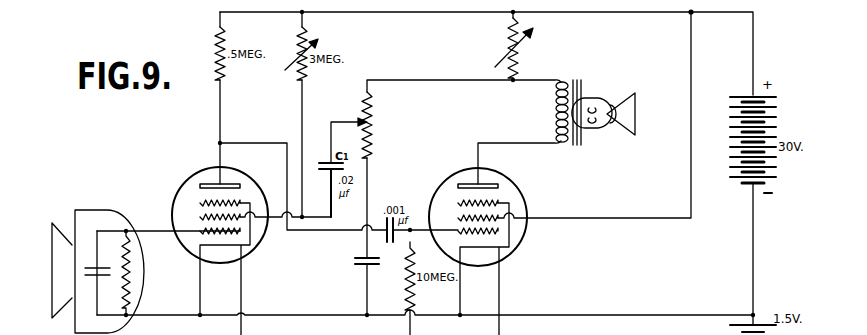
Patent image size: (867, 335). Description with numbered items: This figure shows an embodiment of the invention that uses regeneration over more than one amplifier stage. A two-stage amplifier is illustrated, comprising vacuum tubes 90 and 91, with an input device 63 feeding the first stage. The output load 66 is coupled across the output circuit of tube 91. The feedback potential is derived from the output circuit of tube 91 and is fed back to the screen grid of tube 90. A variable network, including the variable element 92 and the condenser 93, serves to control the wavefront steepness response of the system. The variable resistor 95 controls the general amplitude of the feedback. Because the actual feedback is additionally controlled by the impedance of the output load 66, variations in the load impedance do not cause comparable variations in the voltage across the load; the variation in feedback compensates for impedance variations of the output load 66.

The microphone 63 is at (115, 218).
The vacuum tube 90 is at (258, 240).
The vacuum tube 91 is at (518, 240).
The variable network resistor 92 is at (374, 118).
The condenser 93 is at (360, 253).
The variable resistor 95 is at (522, 53).
The output load 66 is at (570, 147).